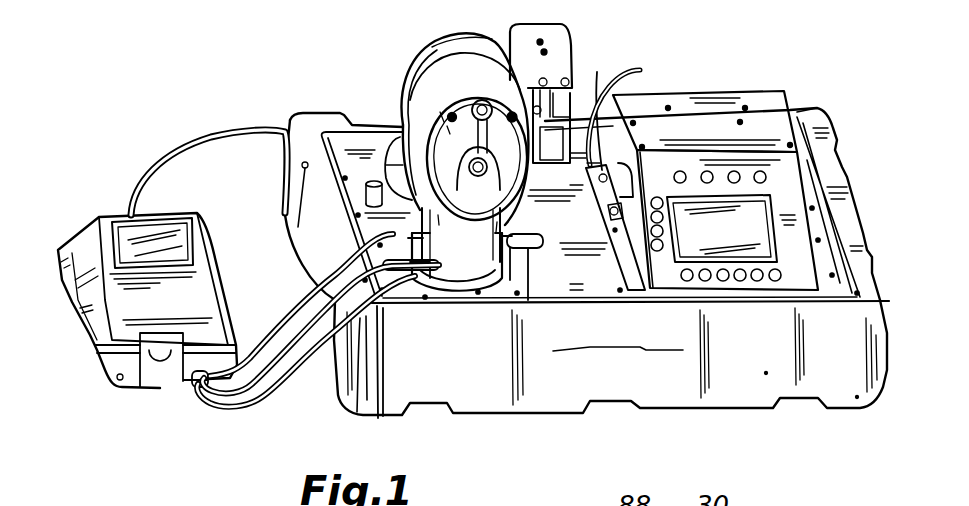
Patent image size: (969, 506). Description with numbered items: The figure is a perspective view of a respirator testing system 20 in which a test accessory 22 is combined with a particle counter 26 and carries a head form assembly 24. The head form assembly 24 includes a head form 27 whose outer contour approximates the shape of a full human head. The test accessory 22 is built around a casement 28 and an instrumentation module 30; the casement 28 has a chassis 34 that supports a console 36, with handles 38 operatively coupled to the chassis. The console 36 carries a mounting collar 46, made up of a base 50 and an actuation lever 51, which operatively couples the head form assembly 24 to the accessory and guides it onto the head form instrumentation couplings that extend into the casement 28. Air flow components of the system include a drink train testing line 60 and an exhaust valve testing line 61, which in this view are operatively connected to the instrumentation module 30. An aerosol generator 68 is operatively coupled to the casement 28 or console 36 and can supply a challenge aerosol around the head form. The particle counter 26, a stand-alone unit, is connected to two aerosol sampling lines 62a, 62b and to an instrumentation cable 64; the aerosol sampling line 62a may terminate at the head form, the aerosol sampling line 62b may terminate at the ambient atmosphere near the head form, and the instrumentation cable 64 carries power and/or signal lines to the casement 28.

The respirator testing system 20 is at (213, 94).
The test accessory 22 is at (350, 406).
The head form assembly 24 is at (409, 74).
The particle counter 26 is at (200, 221).
The head form 27 is at (472, 29).
The casement 28 is at (802, 110).
The instrumentation module 30 is at (699, 93).
The chassis 34 is at (286, 178).
The console 36 is at (585, 285).
The handles 38 is at (300, 262).
The mounting collar 46 is at (455, 284).
The base 50 is at (471, 297).
The actuation lever 51 is at (528, 264).
The drink train testing line 60 is at (597, 109).
The exhaust valve testing line 61 is at (625, 168).
The aerosol sampling line 62a is at (263, 404).
The aerosol sampling line 62b is at (263, 348).
The instrumentation cable 64 is at (190, 146).
The aerosol generator 68 is at (578, 31).